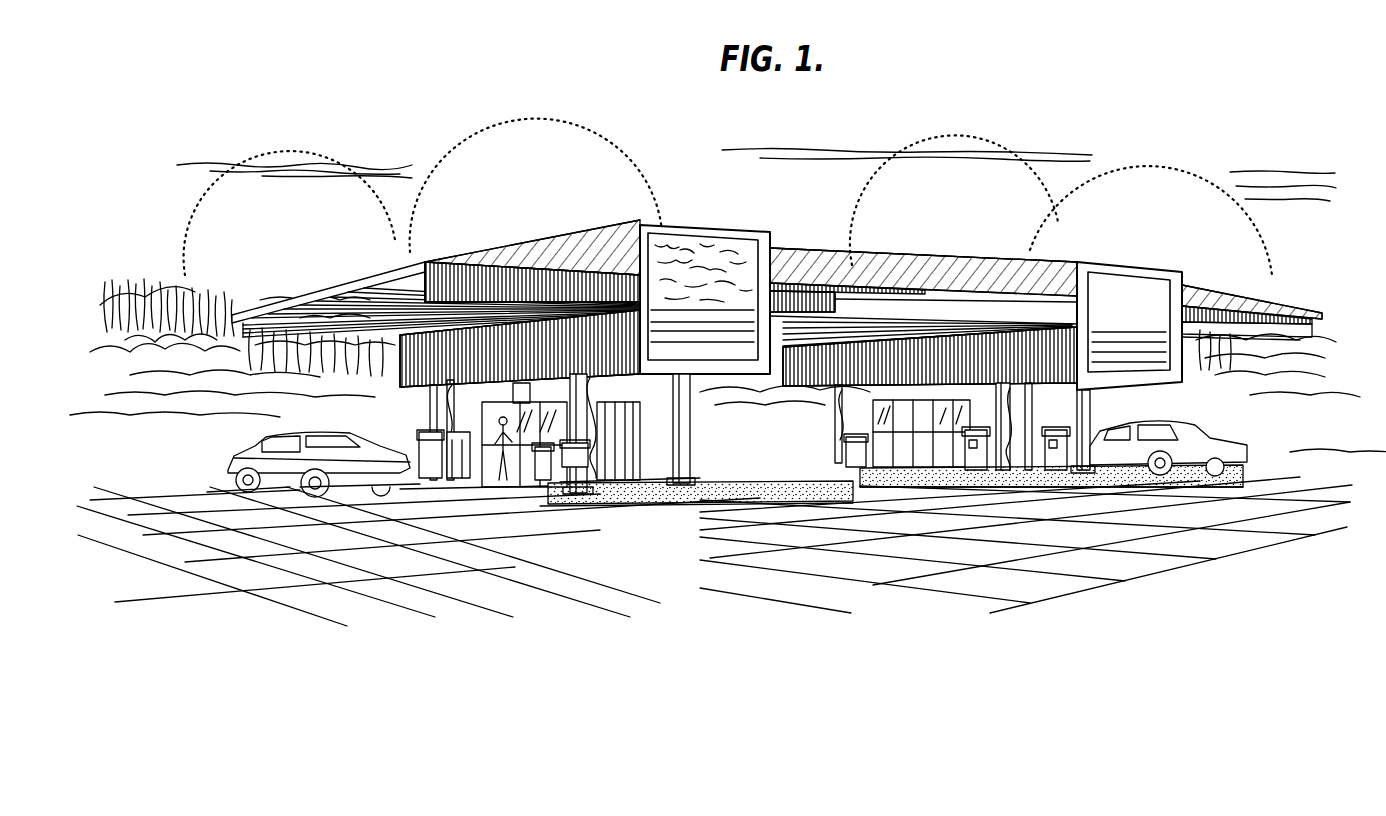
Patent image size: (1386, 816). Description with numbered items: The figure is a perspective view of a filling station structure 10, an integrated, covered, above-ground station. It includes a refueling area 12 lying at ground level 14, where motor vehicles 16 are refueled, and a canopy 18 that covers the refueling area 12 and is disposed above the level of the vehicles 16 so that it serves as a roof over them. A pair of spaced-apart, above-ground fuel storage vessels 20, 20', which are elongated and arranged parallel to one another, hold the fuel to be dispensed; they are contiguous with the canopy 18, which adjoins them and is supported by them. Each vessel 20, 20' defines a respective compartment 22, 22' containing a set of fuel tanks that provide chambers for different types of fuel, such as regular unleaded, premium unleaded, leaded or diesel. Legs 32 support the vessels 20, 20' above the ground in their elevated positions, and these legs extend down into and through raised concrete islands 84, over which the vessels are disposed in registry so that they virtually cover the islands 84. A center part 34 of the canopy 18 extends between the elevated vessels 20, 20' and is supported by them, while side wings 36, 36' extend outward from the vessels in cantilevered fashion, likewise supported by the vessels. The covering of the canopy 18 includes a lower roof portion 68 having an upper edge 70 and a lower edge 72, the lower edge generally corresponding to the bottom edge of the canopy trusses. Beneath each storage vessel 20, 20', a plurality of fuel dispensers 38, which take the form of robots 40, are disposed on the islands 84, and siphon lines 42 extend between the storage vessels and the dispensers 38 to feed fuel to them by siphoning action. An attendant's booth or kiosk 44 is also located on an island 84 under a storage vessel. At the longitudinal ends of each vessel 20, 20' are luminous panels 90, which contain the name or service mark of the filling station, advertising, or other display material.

The filling station structure 10 is at (827, 250).
The refueling area 12 is at (411, 506).
The ground level 14 is at (940, 590).
The motor vehicles 16 is at (233, 458).
The canopy 18 is at (574, 229).
The fuel storage vessel 20 is at (705, 250).
The fuel storage vessel 20' is at (1129, 295).
The compartment 22 is at (703, 270).
The compartment 22' is at (1106, 286).
The legs 32 is at (573, 497).
The center part of canopy 34 is at (873, 307).
The side wing of canopy 36 is at (436, 291).
The side wing of canopy 36' is at (1252, 295).
The fuel dispensers 38 is at (540, 473).
The robots 40 is at (550, 477).
The siphon lines 42 is at (603, 470).
The attendant's booth or kiosk 44 is at (428, 428).
The lower roof portion 68 is at (498, 287).
The upper edge of lower roof portion 70 is at (533, 272).
The lower edge of lower roof portion 72 is at (433, 293).
The raised concrete islands 84 is at (720, 503).
The luminous panels 90 is at (731, 246).